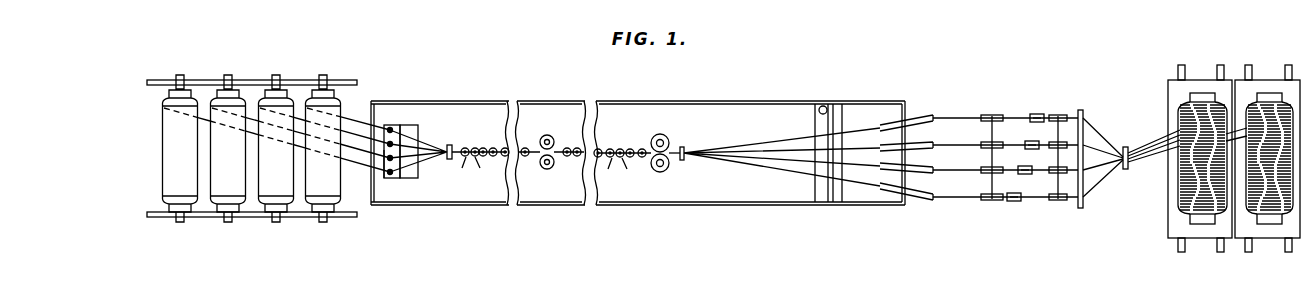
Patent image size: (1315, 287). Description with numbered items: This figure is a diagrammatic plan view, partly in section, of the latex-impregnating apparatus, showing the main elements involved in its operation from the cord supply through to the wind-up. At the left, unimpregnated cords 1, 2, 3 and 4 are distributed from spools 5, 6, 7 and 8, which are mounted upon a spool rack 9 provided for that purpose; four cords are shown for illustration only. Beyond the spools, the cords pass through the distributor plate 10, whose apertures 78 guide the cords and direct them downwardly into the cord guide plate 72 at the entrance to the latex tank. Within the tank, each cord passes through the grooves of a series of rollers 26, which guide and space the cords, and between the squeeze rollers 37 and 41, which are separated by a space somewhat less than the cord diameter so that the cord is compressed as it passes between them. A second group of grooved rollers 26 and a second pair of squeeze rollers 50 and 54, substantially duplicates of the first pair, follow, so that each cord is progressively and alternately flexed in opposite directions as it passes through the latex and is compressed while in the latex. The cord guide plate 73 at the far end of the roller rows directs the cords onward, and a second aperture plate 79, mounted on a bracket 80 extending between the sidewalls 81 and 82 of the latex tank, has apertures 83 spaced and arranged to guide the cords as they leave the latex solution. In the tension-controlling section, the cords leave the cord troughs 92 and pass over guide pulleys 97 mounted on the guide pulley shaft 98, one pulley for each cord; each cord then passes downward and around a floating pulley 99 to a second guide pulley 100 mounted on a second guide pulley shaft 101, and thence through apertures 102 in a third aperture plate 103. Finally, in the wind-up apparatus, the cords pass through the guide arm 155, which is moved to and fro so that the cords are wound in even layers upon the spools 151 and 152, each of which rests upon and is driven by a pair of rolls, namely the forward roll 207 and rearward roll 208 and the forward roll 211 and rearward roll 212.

The unimpregnated cord 1 is at (355, 118).
The unimpregnated cord 2 is at (386, 128).
The unimpregnated cord 3 is at (383, 176).
The unimpregnated cord 4 is at (357, 166).
The spool 5 is at (300, 90).
The spool 6 is at (254, 95).
The spool 7 is at (203, 95).
The spool 8 is at (166, 100).
The spool rack 9 is at (350, 84).
The distributor plate 10 is at (420, 131).
The roller 26 is at (544, 173).
The squeeze roller 37 is at (546, 170).
The squeeze roller 41 is at (546, 135).
The squeeze roller 50 is at (662, 172).
The squeeze roller 54 is at (658, 134).
The cord guide plate 72 is at (453, 150).
The cord guide plate 73 is at (686, 148).
The apertures 78 is at (393, 129).
The second aperture plate 79 is at (826, 104).
The bracket 80 is at (846, 112).
The sidewall 81 is at (712, 205).
The sidewall 82 is at (752, 101).
The apertures 83 is at (838, 190).
The cord troughs 92 is at (935, 121).
The guide pulley 97 is at (1000, 121).
The guide pulley shaft 98 is at (991, 201).
The floating pulley 99 is at (1036, 113).
The second guide pulley 100 is at (1061, 114).
The second guide pulley shaft 101 is at (1066, 197).
The apertures 102 is at (1085, 201).
The third aperture plate 103 is at (1086, 112).
The spool 151 is at (1200, 93).
The spool 152 is at (1270, 93).
The guide arm 155 is at (1126, 146).
The forward roll 207 is at (1170, 238).
The rearward roll 208 is at (1212, 240).
The forward roll 211 is at (1240, 240).
The rearward roll 212 is at (1290, 240).